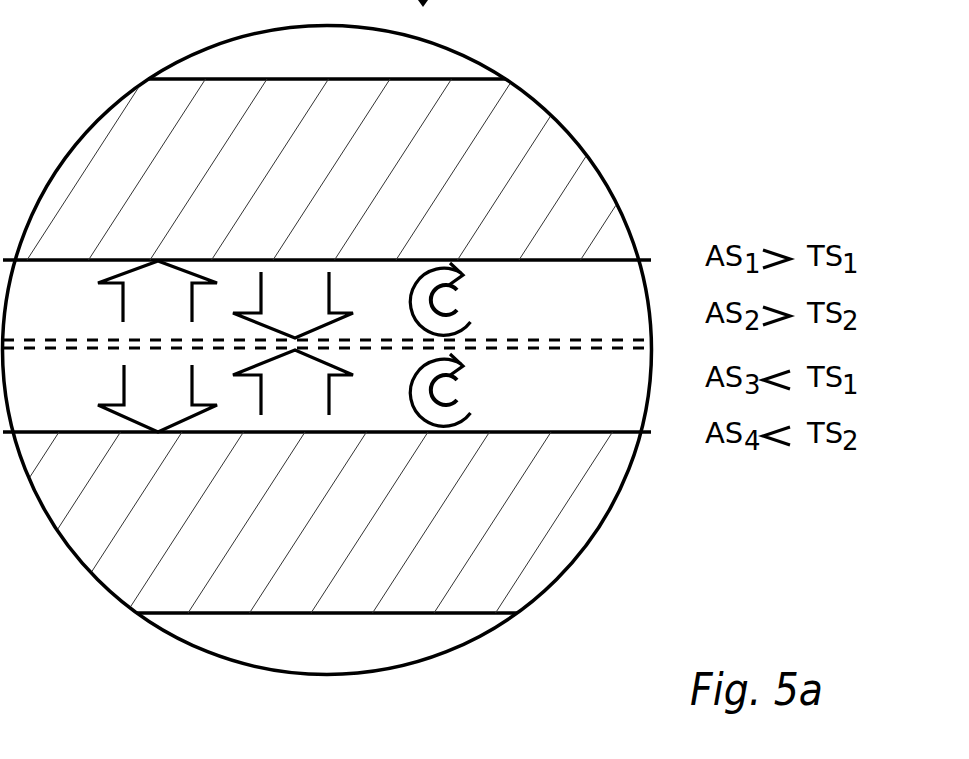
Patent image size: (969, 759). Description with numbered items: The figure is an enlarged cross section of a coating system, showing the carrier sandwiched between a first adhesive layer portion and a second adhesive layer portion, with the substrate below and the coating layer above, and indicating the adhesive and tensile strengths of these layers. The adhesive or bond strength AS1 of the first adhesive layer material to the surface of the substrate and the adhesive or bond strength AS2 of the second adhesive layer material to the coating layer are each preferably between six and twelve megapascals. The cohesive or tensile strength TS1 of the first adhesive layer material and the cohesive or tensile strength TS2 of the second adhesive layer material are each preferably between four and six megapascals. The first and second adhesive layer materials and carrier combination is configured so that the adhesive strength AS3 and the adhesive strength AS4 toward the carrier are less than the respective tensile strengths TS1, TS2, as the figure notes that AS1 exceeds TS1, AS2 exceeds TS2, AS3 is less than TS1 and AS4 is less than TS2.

The adhesive or bond strength of the first adhesive layer material AS1 is at (157, 398).
The adhesive or bond strength of the second adhesive layer material AS2 is at (157, 291).
The adhesive strength of the first adhesive layer material and carrier combination AS3 is at (293, 382).
The adhesive strength of the second adhesive layer material and carrier combination AS4 is at (293, 305).
The cohesive or tensile strength of the first adhesive layer material TS1 is at (460, 390).
The cohesive or tensile strength of the second adhesive layer material TS2 is at (460, 299).